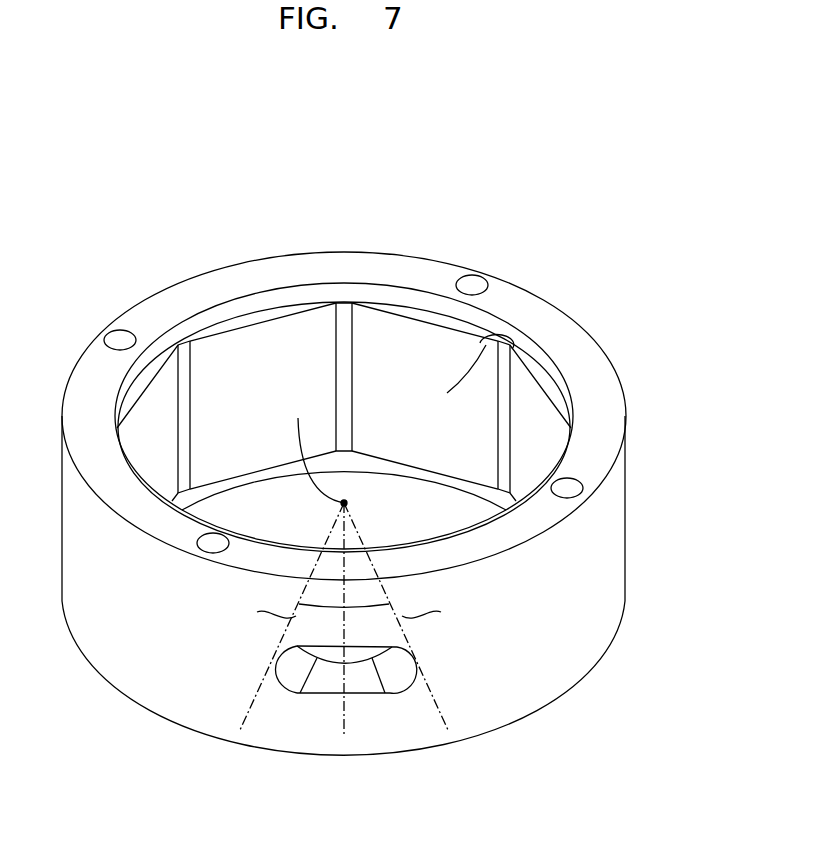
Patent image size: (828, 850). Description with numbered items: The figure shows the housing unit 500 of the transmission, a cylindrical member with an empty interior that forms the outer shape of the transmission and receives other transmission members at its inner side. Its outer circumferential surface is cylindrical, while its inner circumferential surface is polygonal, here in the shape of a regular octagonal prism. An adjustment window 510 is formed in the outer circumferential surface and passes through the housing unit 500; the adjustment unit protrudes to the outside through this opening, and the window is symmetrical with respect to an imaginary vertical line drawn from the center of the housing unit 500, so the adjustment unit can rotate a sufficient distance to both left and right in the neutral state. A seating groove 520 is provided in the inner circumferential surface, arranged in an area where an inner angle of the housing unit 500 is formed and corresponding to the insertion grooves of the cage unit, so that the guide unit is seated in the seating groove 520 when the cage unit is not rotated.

The housing unit 500 is at (639, 226).
The adjustment window 510 is at (403, 667).
The seating groove 520 is at (501, 396).